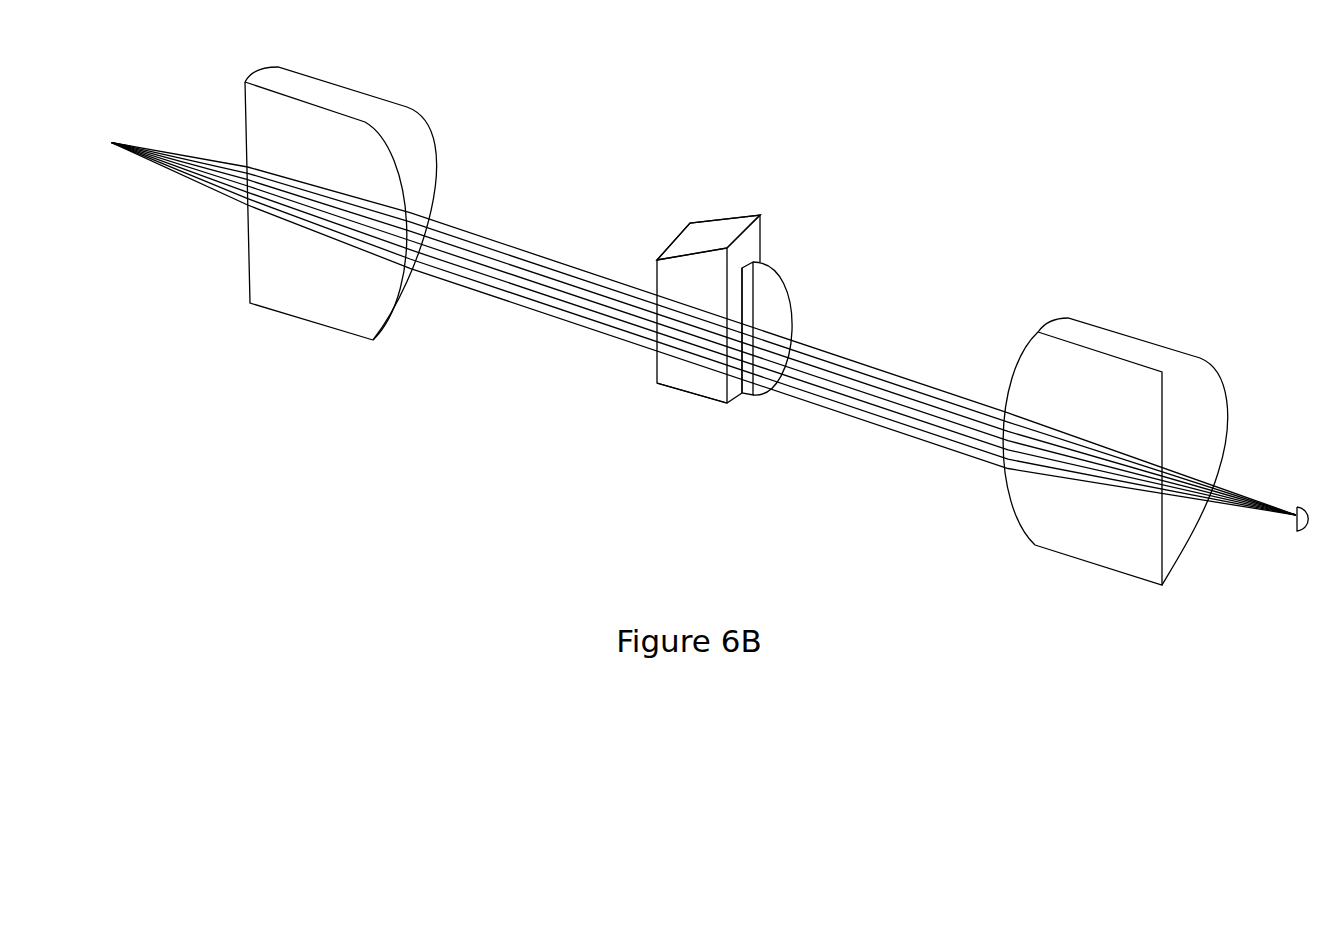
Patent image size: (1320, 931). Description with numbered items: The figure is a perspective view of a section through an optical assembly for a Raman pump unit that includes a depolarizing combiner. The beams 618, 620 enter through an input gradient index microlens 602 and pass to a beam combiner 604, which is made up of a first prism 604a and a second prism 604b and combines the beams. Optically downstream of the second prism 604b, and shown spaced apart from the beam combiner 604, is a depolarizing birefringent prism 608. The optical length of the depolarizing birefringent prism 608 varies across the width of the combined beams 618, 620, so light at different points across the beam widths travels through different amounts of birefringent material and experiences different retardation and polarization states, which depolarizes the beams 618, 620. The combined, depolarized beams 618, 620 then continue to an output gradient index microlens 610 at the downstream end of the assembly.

The input gradient index microlens 602 is at (333, 92).
The beam combiner 604 is at (683, 271).
The first prism 604a is at (673, 388).
The second prism 604b is at (728, 217).
The depolarizing birefringent prism 608 is at (777, 292).
The output gradient index microlens 610 is at (1177, 545).
The beam 618 is at (163, 155).
The beam 620 is at (165, 160).